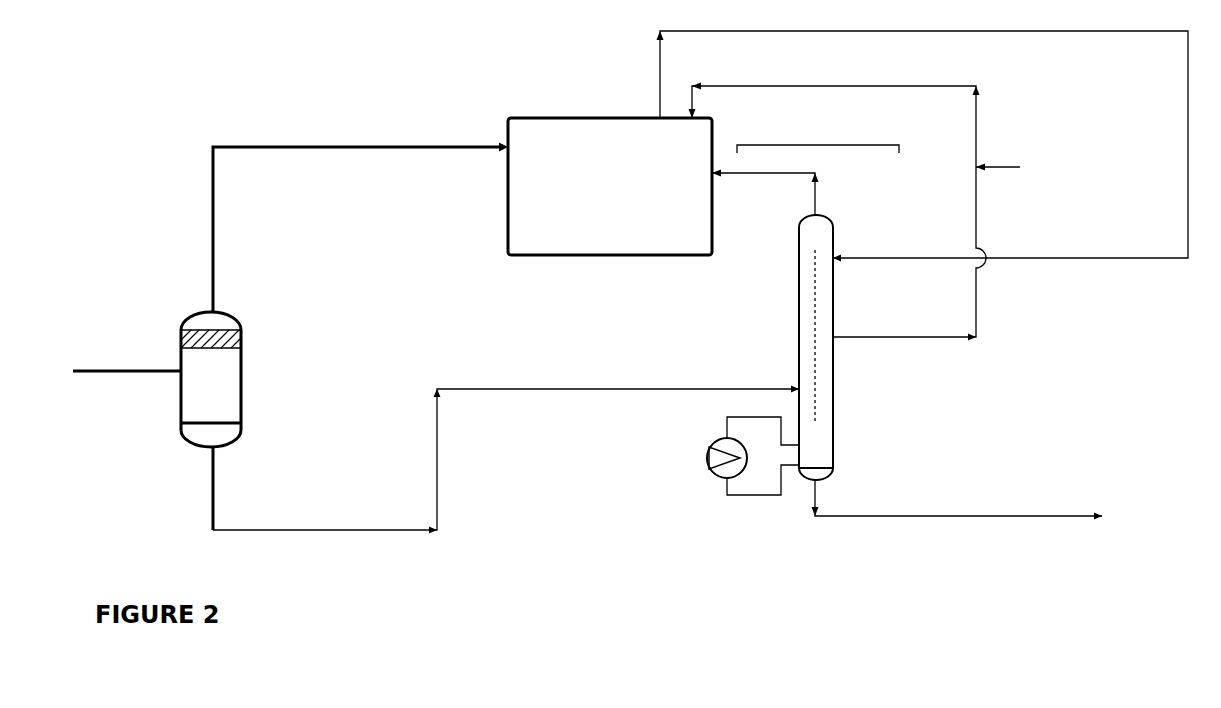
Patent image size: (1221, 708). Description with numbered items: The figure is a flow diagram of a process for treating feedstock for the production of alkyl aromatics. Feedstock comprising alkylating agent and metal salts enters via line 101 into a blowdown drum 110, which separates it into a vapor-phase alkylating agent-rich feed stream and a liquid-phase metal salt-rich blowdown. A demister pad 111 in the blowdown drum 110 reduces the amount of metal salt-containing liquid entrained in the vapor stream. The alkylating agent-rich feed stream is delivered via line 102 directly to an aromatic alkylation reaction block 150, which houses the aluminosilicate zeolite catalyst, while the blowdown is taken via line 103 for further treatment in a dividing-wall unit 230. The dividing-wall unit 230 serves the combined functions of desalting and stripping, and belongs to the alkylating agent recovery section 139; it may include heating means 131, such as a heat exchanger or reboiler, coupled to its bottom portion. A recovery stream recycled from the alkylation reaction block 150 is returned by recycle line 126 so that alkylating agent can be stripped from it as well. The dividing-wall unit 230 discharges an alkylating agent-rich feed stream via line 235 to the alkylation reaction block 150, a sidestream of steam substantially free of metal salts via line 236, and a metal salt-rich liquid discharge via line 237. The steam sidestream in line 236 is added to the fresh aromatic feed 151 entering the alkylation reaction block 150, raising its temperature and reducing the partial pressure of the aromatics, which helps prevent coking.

The feedstock line 101 is at (127, 360).
The blowdown drum 110 is at (237, 316).
The demister pad 111 is at (181, 340).
The alkylating agent-rich feed stream line 102 is at (360, 228).
The blowdown line 103 is at (506, 450).
The aromatic alkylation reaction block 150 is at (557, 140).
The recycle line 126 is at (923, 135).
The sidestream line 236 is at (838, 212).
The alkylating agent recovery section 139 is at (830, 145).
The alkylating agent-rich feed stream line 235 is at (765, 185).
The fresh aromatic feed 151 is at (998, 159).
The dividing-wall unit 230 is at (826, 236).
The heating means 131 is at (712, 447).
The metal salt-rich liquid discharge line 237 is at (957, 500).